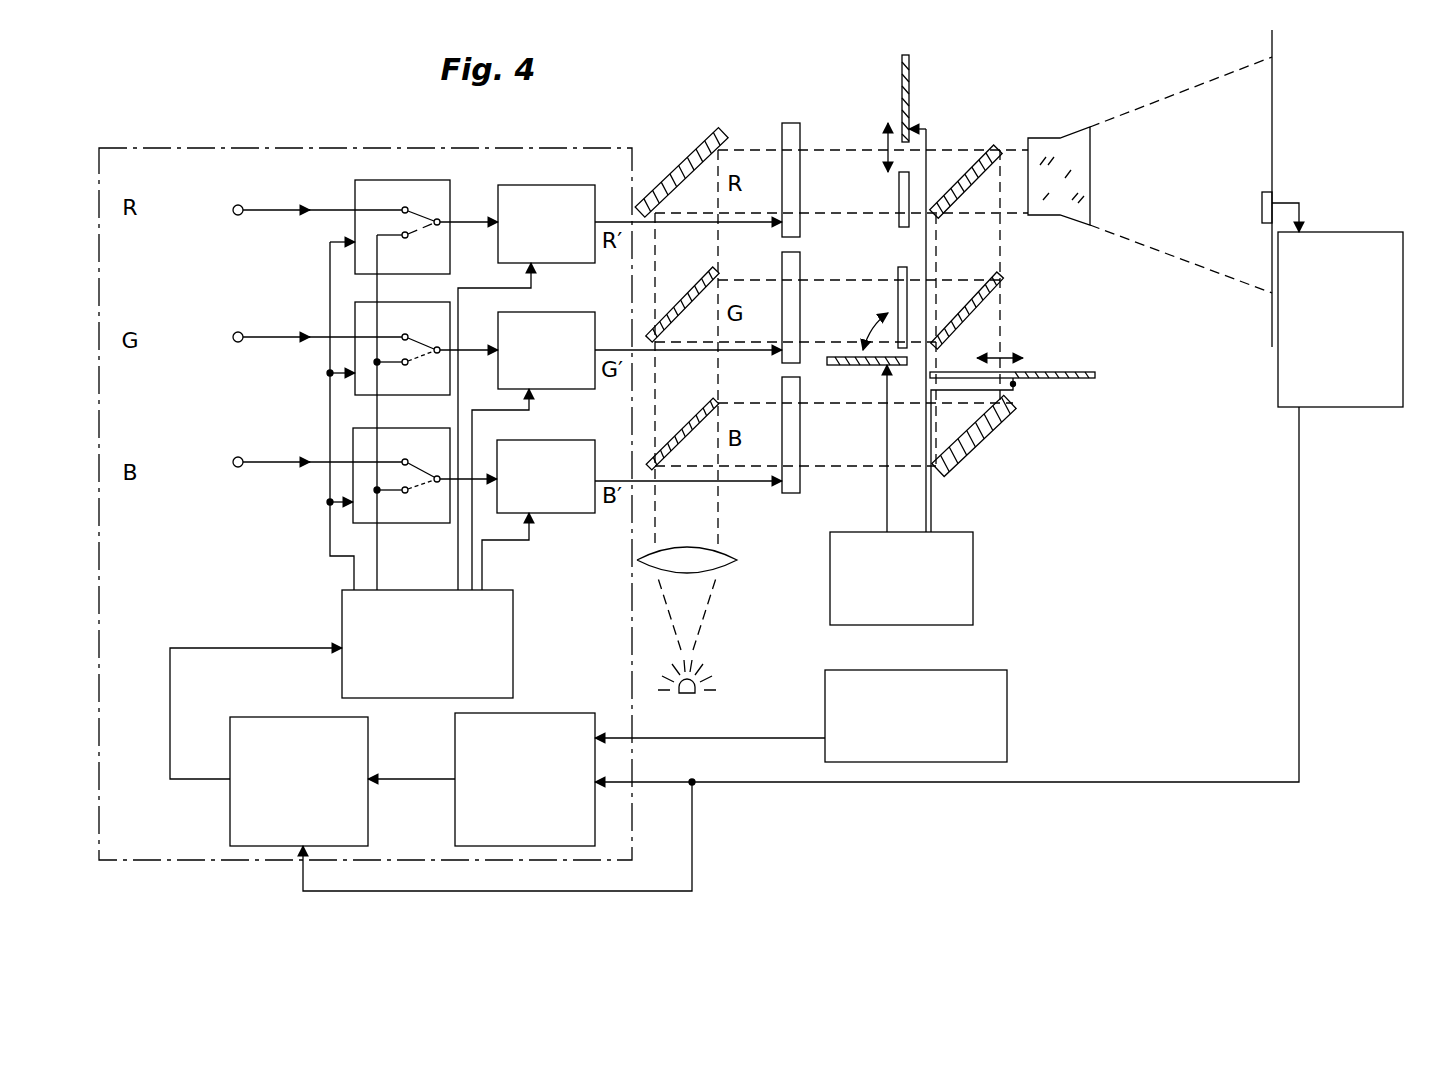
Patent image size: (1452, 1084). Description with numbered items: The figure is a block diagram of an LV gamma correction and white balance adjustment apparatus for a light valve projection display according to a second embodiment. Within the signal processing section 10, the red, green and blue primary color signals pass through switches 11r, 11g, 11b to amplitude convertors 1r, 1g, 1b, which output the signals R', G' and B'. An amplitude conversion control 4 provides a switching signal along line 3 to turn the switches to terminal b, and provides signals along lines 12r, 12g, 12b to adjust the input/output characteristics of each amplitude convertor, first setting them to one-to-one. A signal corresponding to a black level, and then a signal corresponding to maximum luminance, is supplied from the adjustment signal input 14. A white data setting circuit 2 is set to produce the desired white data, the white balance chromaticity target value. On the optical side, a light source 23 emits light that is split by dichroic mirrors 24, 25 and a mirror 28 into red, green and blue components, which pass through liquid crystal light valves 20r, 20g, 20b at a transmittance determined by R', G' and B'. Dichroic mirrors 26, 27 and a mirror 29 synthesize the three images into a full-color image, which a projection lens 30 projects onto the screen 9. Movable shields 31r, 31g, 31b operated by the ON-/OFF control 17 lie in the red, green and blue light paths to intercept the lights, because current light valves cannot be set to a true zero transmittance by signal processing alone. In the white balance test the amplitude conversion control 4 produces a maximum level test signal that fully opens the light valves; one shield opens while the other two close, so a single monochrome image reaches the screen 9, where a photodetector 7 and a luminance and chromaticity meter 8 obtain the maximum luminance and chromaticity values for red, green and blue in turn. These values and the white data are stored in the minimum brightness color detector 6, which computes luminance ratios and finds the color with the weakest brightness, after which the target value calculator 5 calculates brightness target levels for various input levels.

The signal processing circuit 10 is at (338, 148).
The switch 11r is at (385, 178).
The switch 11g is at (360, 302).
The switch 11b is at (362, 428).
The amplitude convertor 1r is at (515, 185).
The amplitude convertor 1g is at (525, 312).
The amplitude convertor 1b is at (535, 440).
The line 12r is at (502, 285).
The line 12g is at (512, 410).
The line 12b is at (502, 542).
The line 3 is at (328, 541).
The adjustment signal input 14 is at (380, 550).
The amplitude conversion control 4 is at (342, 607).
The target value calculator 5 is at (230, 820).
The minimum brightness color detector 6 is at (525, 713).
The white data setting circuit 2 is at (1007, 722).
The ON-/OFF control 17 is at (973, 575).
The liquid crystal light valve 20r is at (782, 128).
The liquid crystal light valve 20g is at (800, 265).
The liquid crystal light valve 20b is at (800, 412).
The dichroic mirror 24 is at (690, 422).
The dichroic mirror 25 is at (690, 285).
The dichroic mirror 26 is at (1003, 280).
The dichroic mirror 27 is at (992, 145).
The mirror 28 is at (668, 165).
The mirror 29 is at (985, 462).
The movable shield 31r is at (902, 82).
The movable shield 31g is at (840, 357).
The movable shield 31b is at (1048, 380).
The projection lens 30 is at (1063, 217).
The screen 9 is at (1272, 108).
The photodetector 7 is at (1262, 205).
The luminance and chromaticity meter 8 is at (1325, 407).
The light source 23 is at (698, 690).